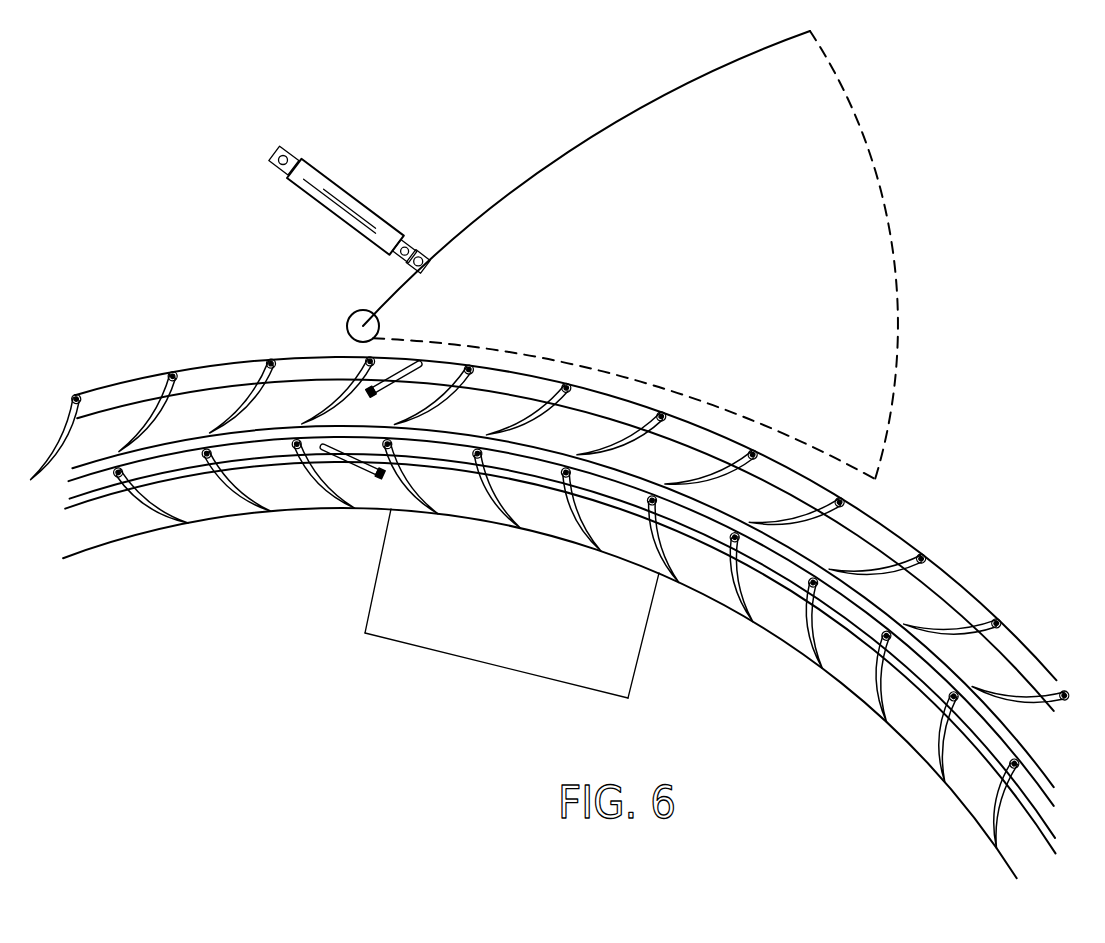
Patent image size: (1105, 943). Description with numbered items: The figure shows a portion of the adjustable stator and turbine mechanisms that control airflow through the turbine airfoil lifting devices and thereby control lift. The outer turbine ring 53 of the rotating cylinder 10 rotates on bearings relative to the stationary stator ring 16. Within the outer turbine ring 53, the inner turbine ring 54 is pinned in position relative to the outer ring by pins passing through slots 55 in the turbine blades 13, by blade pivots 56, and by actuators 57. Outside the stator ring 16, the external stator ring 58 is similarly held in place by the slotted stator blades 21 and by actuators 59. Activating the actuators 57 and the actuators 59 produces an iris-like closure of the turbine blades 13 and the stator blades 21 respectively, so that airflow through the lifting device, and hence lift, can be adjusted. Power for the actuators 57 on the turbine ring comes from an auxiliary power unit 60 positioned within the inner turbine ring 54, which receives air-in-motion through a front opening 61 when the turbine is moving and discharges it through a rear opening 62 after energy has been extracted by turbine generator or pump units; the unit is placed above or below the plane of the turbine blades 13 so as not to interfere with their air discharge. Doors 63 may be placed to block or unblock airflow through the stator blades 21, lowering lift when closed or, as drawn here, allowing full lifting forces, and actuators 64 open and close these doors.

The rotating cylinder 10 is at (782, 568).
The turbine blades 13 is at (888, 695).
The stator ring 16 is at (918, 587).
The stator blades 21 is at (157, 383).
The outer turbine ring 53 is at (857, 617).
The inner turbine ring 54 is at (200, 508).
The slots 55 is at (238, 478).
The blade pivots 56 is at (118, 480).
The actuators 57 is at (349, 461).
The external stator ring 58 is at (203, 368).
The actuators 59 is at (388, 387).
The auxiliary power unit 60 is at (500, 607).
The front opening 61 is at (371, 600).
The rear opening 62 is at (643, 645).
The doors 63 is at (628, 116).
The actuators 64 is at (382, 215).